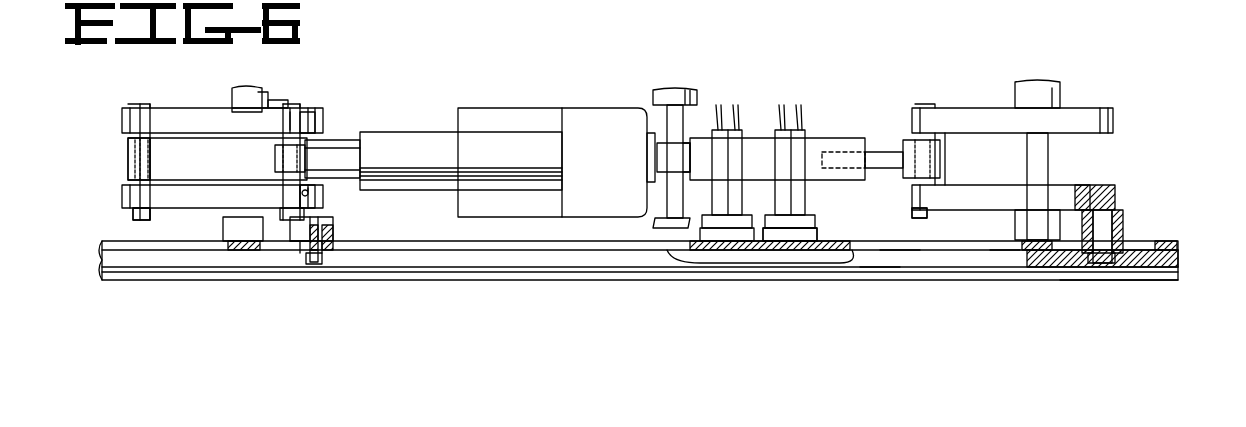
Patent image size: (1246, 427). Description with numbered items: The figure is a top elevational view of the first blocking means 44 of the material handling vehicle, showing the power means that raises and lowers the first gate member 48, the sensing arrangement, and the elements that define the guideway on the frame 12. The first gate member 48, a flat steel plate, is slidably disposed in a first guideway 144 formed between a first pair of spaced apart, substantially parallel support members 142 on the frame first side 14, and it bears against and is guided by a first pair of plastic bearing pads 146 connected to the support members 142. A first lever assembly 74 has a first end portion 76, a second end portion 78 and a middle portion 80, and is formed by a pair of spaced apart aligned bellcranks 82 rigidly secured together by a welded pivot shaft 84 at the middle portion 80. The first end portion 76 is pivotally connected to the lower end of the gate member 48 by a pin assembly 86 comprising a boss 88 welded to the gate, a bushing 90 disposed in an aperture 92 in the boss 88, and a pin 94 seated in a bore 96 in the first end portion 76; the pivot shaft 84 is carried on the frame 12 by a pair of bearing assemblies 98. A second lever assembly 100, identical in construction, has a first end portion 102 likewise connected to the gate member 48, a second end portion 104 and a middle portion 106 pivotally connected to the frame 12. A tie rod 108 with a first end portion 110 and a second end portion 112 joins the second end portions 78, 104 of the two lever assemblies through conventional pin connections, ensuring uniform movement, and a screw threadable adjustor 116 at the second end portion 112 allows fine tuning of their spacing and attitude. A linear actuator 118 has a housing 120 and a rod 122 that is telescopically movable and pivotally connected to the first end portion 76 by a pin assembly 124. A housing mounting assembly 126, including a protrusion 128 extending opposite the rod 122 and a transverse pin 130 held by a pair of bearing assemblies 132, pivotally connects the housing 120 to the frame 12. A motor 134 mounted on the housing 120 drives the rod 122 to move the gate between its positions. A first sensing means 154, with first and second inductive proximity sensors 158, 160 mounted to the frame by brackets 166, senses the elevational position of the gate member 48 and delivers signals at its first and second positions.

The frame 12 is at (503, 283).
The first side 14 is at (640, 270).
The first means for blocking movement 44 is at (1073, 287).
The first gate member 48 is at (1172, 258).
The first lever assembly 74 is at (237, 188).
The first end portion 76 is at (314, 120).
The second end portion 78 is at (163, 108).
The middle portion 80 is at (185, 110).
The bellcranks 82 is at (125, 142).
The pivot shaft 84 is at (270, 100).
The pin assembly 86 is at (312, 266).
The boss 88 is at (335, 225).
The bushing 90 is at (300, 242).
The aperture 92 is at (324, 252).
The pin 94 is at (310, 254).
The bore 96 is at (315, 192).
The bearing assemblies 98 is at (236, 93).
The second lever assembly 100 is at (1041, 187).
The first end portion 102 is at (1090, 110).
The second end portion 104 is at (935, 125).
The middle portion 106 is at (1025, 177).
The tie rod 108 is at (345, 142).
The first end portion 110 is at (138, 145).
The second end portion 112 is at (838, 146).
The screw threadable adjustor 116 is at (885, 170).
The linear actuator 118 is at (518, 105).
The housing 120 is at (600, 106).
The rod 122 is at (345, 152).
The pin assembly 124 is at (302, 105).
The housing mounting assembly 126 is at (690, 90).
The protrusion 128 is at (686, 140).
The pin 130 is at (670, 190).
The bearing assemblies 132 is at (665, 90).
The motor 134 is at (497, 112).
The support members 142 is at (860, 270).
The first guideway 144 is at (890, 255).
The bearing pads 146 is at (1000, 250).
The first sensing means 154 is at (760, 278).
The first inductive proximity sensor 158 is at (800, 140).
The second inductive proximity sensor 160 is at (740, 140).
The brackets 166 is at (812, 228).